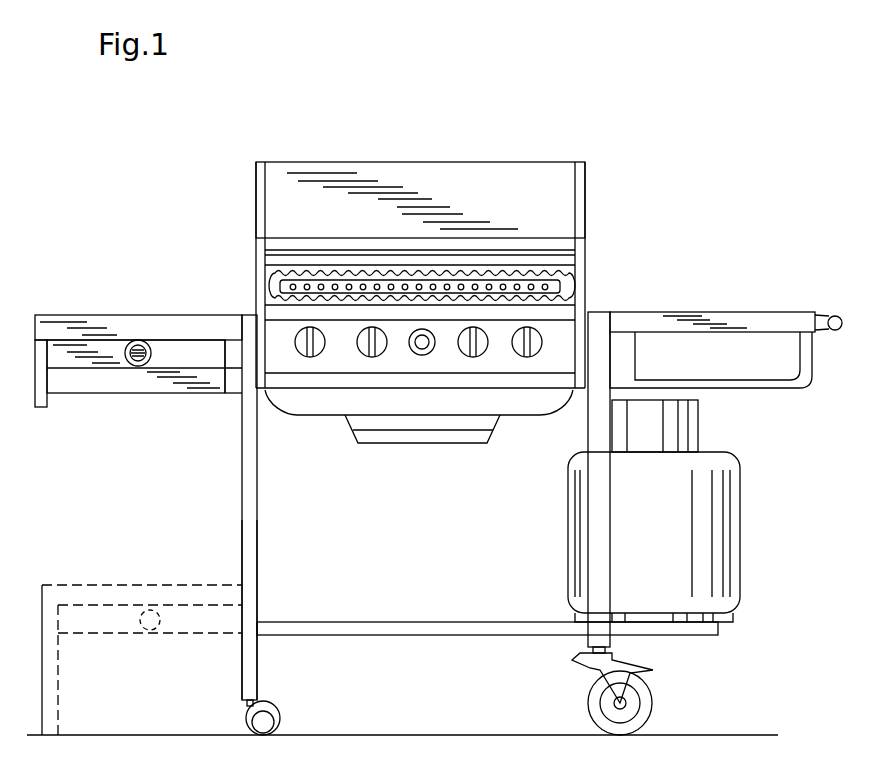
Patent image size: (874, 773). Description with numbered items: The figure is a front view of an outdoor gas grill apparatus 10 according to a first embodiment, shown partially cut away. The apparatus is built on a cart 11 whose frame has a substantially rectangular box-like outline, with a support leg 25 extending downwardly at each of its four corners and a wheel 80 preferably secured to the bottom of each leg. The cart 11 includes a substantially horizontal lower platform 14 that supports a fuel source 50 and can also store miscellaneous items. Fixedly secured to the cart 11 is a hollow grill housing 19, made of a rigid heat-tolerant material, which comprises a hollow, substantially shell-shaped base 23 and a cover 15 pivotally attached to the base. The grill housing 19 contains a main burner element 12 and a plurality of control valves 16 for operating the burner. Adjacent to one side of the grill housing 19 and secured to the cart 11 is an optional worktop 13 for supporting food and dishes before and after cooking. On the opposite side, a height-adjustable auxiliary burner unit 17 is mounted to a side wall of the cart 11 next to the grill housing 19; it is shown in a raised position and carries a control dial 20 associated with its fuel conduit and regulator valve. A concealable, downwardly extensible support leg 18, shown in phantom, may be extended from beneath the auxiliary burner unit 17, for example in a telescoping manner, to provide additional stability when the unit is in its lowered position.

The outdoor gas grill apparatus 10 is at (345, 135).
The cart 11 is at (240, 494).
The main burner element 12 is at (282, 286).
The worktop 13 is at (745, 311).
The lower platform 14 is at (479, 639).
The cover 15 is at (519, 159).
The control valves 16 is at (542, 337).
The auxiliary burner unit 17 is at (154, 313).
The support leg 18 is at (142, 660).
The grill housing 19 is at (587, 207).
The control dial 20 is at (132, 368).
The base 23 is at (525, 403).
The support leg 25 is at (258, 668).
The fuel source 50 is at (676, 524).
The wheels 80 is at (664, 689).